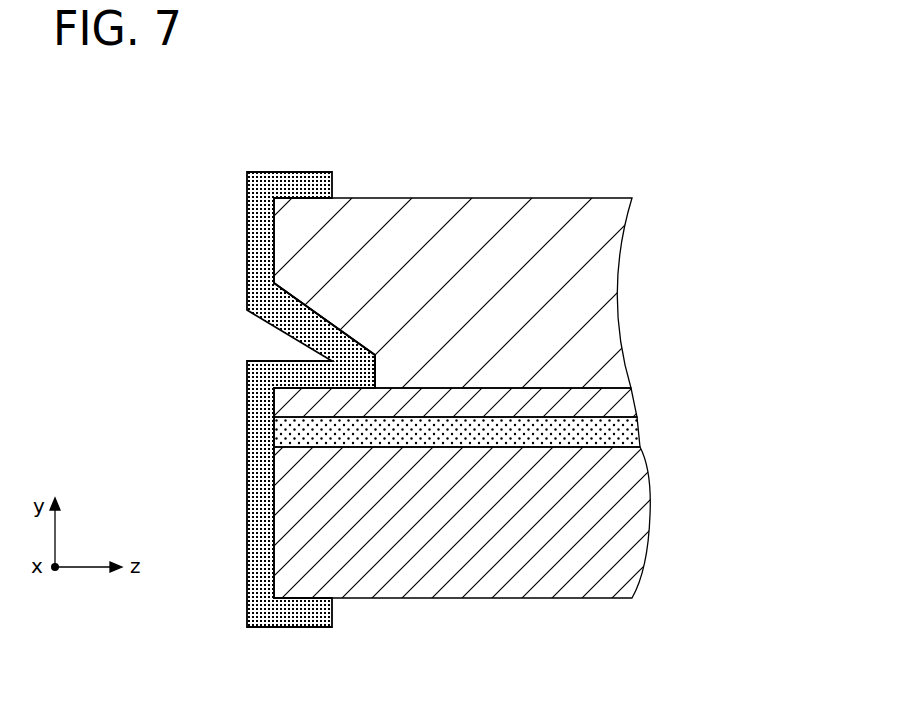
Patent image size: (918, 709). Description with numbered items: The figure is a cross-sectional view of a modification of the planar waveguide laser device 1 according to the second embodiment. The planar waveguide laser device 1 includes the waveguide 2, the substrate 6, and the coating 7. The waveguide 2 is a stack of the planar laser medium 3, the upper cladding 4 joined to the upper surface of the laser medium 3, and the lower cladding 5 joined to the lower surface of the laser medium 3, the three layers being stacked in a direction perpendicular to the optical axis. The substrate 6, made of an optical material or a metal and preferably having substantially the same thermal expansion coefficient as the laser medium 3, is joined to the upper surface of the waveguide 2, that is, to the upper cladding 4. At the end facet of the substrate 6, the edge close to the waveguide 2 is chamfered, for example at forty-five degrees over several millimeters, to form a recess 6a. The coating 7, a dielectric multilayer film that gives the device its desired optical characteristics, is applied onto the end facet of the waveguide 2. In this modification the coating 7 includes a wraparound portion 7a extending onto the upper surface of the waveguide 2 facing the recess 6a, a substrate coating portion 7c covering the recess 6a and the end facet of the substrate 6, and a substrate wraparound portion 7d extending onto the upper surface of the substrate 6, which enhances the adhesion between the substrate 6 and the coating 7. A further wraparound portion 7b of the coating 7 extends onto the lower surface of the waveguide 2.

The planar waveguide laser device 1 is at (697, 149).
The waveguide 2 is at (747, 388).
The laser medium 3 is at (605, 433).
The upper cladding 4 is at (607, 401).
The lower cladding 5 is at (605, 527).
The substrate 6 is at (595, 308).
The recess 6a is at (343, 333).
The coating 7 is at (250, 507).
The wraparound portion 7a is at (283, 370).
The wraparound portion 7b is at (290, 618).
The substrate coating portion 7c is at (262, 217).
The substrate wraparound portion 7d is at (283, 173).